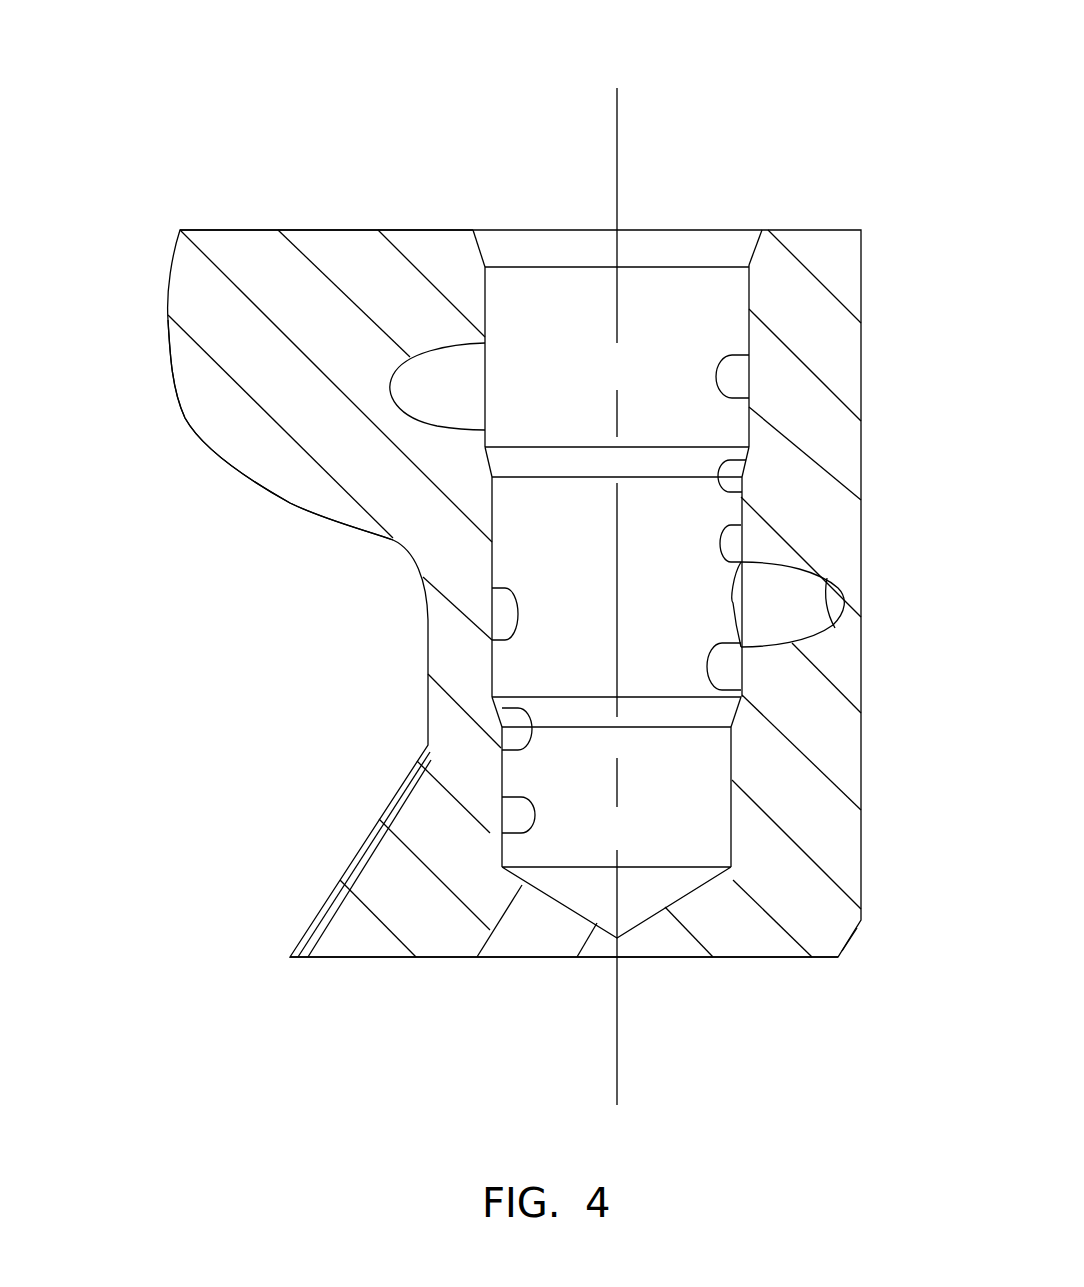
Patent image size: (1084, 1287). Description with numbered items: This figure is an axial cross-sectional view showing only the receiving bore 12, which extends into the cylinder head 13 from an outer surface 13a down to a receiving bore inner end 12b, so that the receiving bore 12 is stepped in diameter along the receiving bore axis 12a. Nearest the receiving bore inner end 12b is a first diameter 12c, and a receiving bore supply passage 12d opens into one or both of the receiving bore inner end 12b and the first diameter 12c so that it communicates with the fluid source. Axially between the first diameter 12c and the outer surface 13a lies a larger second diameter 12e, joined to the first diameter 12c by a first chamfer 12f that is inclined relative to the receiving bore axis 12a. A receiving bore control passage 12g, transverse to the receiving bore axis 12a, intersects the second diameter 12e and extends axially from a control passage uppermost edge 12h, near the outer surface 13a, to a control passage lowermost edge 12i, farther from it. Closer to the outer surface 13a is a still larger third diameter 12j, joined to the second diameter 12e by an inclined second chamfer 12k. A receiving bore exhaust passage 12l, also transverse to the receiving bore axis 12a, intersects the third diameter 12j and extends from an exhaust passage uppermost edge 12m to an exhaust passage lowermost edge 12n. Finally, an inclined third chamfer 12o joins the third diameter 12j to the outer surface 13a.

The receiving bore 12 is at (667, 250).
The receiving bore axis 12a is at (617, 1076).
The receiving bore inner end 12b is at (673, 903).
The first diameter 12c is at (502, 835).
The receiving bore supply passage 12d is at (513, 948).
The second diameter 12e is at (493, 640).
The first chamfer 12f is at (503, 748).
The receiving bore control passage 12g is at (813, 603).
The control passage uppermost edge 12h is at (745, 526).
The control passage lowermost edge 12i is at (745, 690).
The third diameter 12j is at (740, 398).
The second chamfer 12k is at (742, 485).
The receiving bore exhaust passage 12l is at (410, 398).
The exhaust passage uppermost edge 12m is at (485, 342).
The exhaust passage lowermost edge 12n is at (487, 430).
The third chamfer 12o is at (753, 248).
The cylinder head 13 is at (195, 338).
The outer surface 13a is at (223, 230).